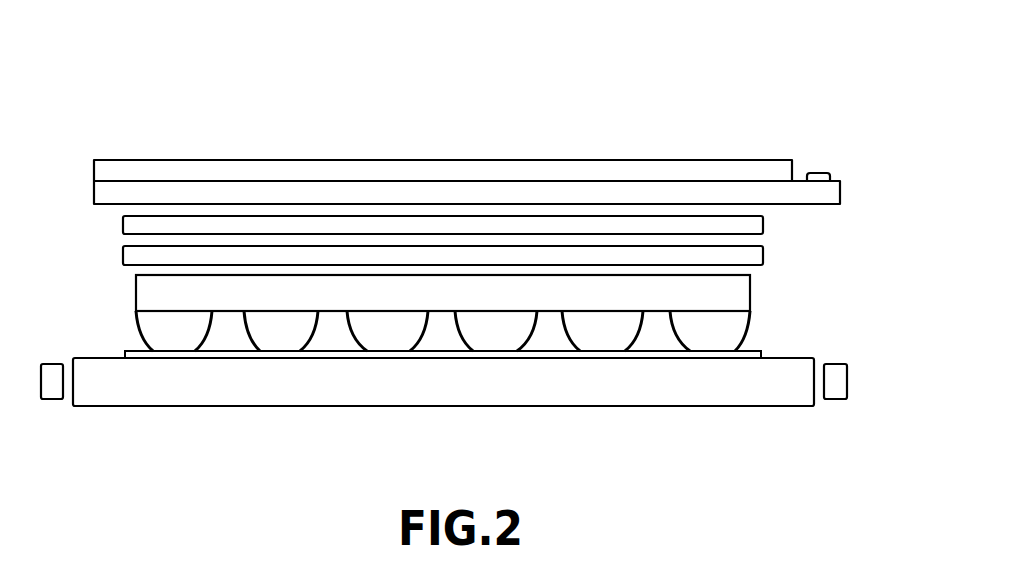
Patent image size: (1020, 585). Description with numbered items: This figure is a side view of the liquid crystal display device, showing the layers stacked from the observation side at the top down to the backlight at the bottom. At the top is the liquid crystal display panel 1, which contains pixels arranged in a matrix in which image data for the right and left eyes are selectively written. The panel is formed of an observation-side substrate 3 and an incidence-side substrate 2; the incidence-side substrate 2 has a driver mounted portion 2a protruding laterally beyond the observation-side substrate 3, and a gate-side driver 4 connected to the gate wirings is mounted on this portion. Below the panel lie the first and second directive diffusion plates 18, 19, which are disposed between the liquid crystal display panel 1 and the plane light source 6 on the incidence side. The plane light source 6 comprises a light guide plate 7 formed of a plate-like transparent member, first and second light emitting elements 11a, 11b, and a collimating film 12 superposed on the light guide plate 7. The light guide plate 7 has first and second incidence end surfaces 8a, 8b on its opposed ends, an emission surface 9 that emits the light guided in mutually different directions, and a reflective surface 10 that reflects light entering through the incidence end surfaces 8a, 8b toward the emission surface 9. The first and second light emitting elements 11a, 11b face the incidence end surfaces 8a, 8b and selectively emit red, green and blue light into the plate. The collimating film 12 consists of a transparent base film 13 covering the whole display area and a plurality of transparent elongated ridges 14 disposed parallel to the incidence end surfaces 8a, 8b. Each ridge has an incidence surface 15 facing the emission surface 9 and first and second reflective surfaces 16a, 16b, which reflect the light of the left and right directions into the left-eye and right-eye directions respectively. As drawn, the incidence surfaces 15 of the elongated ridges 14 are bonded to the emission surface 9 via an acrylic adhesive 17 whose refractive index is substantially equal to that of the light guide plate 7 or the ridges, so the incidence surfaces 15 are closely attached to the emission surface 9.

The liquid crystal display panel 1 is at (495, 146).
The incidence-side substrate 2 is at (495, 159).
The driver mounted portion 2a is at (817, 195).
The observation-side substrate 3 is at (598, 173).
The gate-side driver 4 is at (815, 173).
The plane light source 6 is at (468, 356).
The light guide plate 7 is at (468, 383).
The first incidence end surface 8a is at (468, 345).
The second incidence end surface 8b is at (815, 364).
The emission surface 9 is at (510, 370).
The reflective surface 10 is at (468, 383).
The first light emitting element 11a is at (52, 383).
The second light emitting element 11b is at (835, 383).
The collimating film 12 is at (515, 356).
The transparent base film 13 is at (553, 292).
The elongated ridges 14 is at (443, 396).
The incidence surface 15 is at (327, 333).
The first reflective surface 16a is at (317, 333).
The second reflective surface 16b is at (247, 333).
The acrylic adhesive 17 is at (743, 350).
The first directive diffusion plate 18 is at (227, 228).
The second directive diffusion plate 19 is at (342, 255).